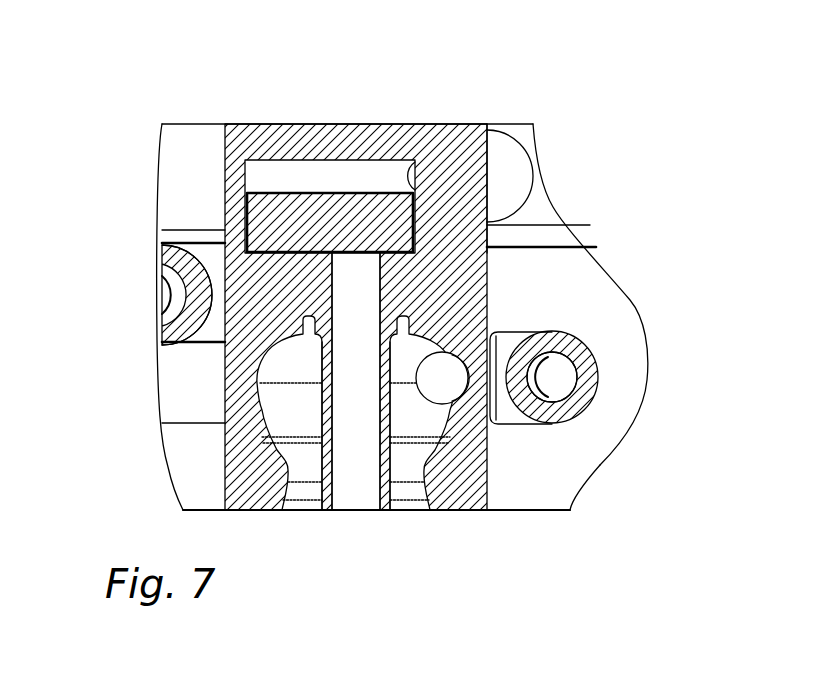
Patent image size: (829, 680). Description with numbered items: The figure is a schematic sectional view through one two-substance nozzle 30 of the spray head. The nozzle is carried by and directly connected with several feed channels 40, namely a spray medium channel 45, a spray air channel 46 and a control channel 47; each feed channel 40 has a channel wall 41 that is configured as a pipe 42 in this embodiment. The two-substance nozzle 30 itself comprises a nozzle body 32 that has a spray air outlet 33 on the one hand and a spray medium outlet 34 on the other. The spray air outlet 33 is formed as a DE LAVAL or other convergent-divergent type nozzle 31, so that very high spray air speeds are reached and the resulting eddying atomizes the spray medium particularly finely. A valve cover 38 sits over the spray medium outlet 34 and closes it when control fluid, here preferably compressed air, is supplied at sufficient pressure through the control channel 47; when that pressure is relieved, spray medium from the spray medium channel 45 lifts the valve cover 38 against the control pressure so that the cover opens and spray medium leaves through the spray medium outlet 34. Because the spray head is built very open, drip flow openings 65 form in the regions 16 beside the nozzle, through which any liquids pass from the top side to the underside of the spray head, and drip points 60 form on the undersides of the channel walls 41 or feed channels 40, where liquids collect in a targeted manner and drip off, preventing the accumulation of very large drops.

The two-substance nozzle 30 is at (380, 124).
The nozzle body 32 is at (460, 124).
The valve cover 38 is at (312, 210).
The spray medium outlet 34 is at (355, 511).
The spray air outlet 33 is at (412, 511).
The convergent-divergent type nozzle 31 is at (290, 470).
The spray medium channel 45 is at (158, 361).
The control channel 47 is at (537, 141).
The feed channel 40 is at (515, 172).
The channel wall 41 is at (163, 259).
The pipe 42 is at (157, 331).
The spray air channel 46 is at (575, 413).
The drip point 60 is at (553, 425).
The drip flow opening 65 is at (551, 307).
The region 16 is at (546, 483).